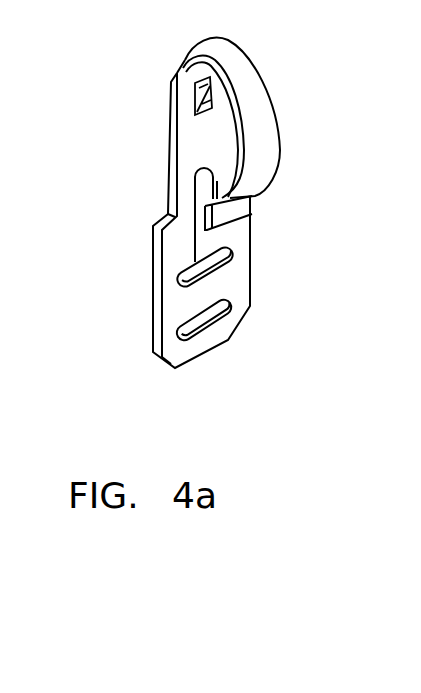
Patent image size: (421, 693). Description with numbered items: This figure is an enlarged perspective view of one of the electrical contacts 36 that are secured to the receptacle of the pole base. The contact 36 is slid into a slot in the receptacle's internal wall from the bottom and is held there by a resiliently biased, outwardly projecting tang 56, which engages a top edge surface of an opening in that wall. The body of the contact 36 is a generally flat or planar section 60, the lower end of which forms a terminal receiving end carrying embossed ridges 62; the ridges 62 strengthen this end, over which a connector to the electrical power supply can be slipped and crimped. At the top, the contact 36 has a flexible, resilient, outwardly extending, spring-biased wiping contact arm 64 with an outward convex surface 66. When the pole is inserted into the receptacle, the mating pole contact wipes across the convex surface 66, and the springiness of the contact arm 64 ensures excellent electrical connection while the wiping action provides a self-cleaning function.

The contact 36 is at (272, 210).
The tang 56 is at (195, 98).
The planar section 60 is at (155, 235).
The embossed ridges 62 is at (212, 253).
The wiping contact arm 64 is at (240, 73).
The convex surface 66 is at (260, 124).